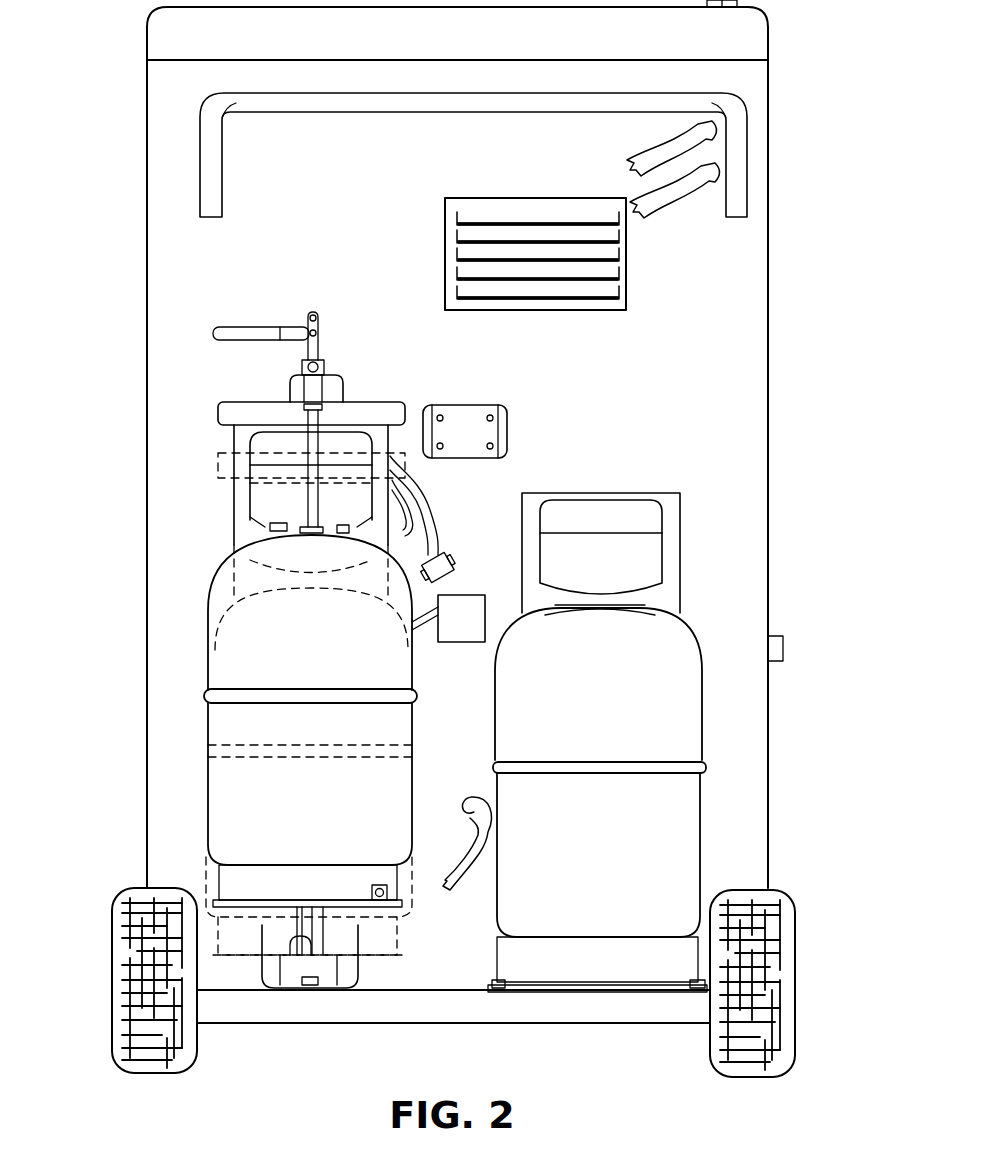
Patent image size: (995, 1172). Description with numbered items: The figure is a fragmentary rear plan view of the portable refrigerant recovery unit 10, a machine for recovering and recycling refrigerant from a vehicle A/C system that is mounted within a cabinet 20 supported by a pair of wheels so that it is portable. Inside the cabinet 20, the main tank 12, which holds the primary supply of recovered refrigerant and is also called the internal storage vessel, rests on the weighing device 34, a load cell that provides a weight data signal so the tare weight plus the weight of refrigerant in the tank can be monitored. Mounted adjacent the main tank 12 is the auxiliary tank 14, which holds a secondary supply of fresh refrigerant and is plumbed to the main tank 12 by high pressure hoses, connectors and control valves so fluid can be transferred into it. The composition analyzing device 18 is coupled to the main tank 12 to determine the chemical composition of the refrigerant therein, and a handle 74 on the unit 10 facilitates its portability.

The portable recovery unit 10 is at (788, 134).
The main tank 12 is at (203, 662).
The auxiliary tank 14 is at (712, 703).
The composition analyzing device 18 is at (465, 595).
The cabinet 20 is at (768, 86).
The weighing device 34 is at (296, 940).
The handle 74 is at (200, 163).